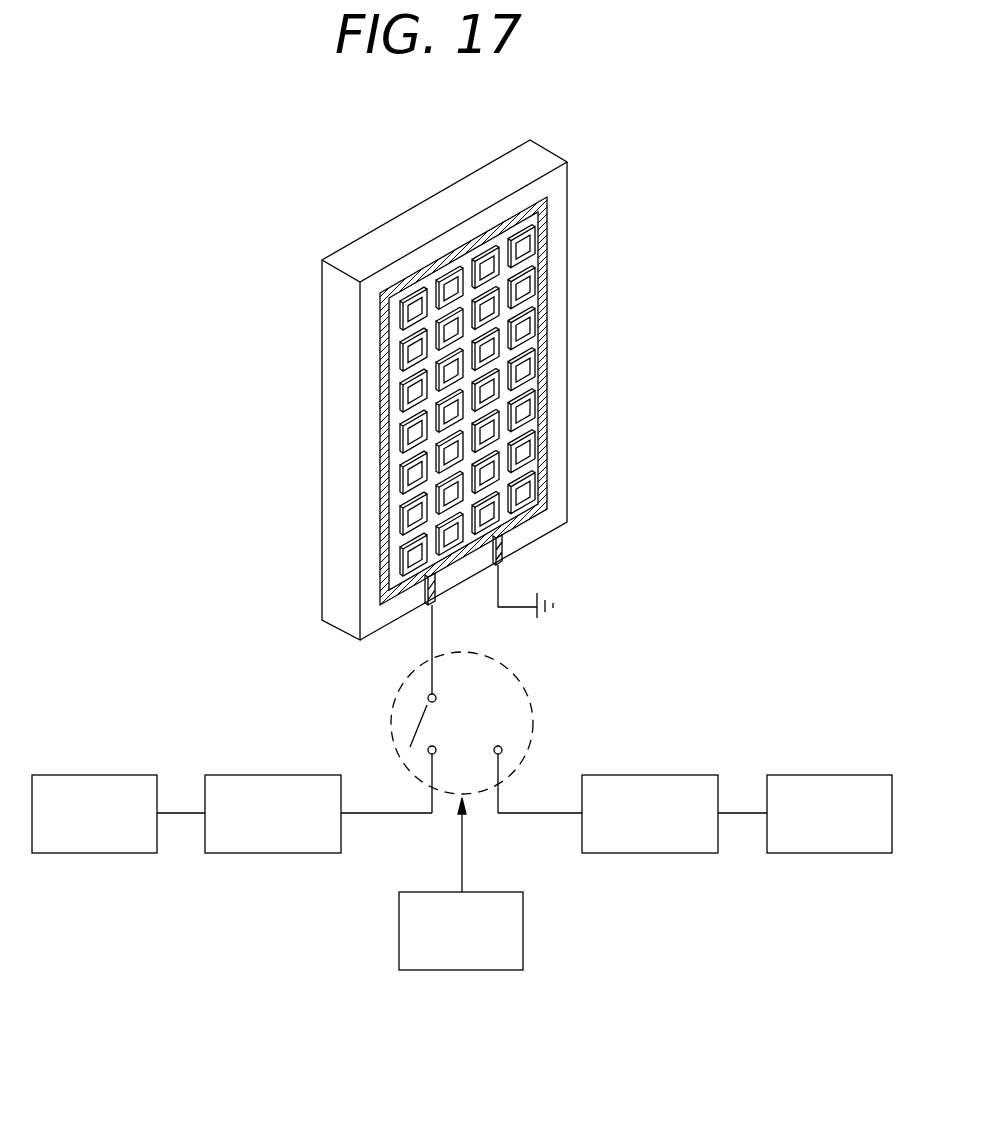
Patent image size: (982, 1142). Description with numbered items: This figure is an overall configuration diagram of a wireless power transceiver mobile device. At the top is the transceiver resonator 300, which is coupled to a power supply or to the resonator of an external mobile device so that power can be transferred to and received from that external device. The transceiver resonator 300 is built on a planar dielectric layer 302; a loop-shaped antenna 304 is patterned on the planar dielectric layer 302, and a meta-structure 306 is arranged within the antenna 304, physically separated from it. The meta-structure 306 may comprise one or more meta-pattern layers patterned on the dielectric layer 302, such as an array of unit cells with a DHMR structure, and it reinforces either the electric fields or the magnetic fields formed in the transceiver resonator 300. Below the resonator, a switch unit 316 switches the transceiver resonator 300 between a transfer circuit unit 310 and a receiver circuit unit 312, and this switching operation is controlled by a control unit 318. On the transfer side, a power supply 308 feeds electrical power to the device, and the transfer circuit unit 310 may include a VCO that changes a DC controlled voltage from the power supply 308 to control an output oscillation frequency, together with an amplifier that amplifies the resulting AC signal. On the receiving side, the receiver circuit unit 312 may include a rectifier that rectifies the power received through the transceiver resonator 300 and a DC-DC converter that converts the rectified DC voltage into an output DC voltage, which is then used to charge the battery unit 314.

The transceiver resonator 300 is at (362, 162).
The planar dielectric layer 302 is at (413, 222).
The loop-shaped antenna 304 is at (546, 264).
The meta-structure 306 is at (527, 288).
The power supply 308 is at (132, 774).
The transfer circuit unit 310 is at (315, 774).
The receiver circuit unit 312 is at (600, 774).
The battery unit 314 is at (791, 774).
The switch unit 316 is at (523, 687).
The control unit 318 is at (498, 891).